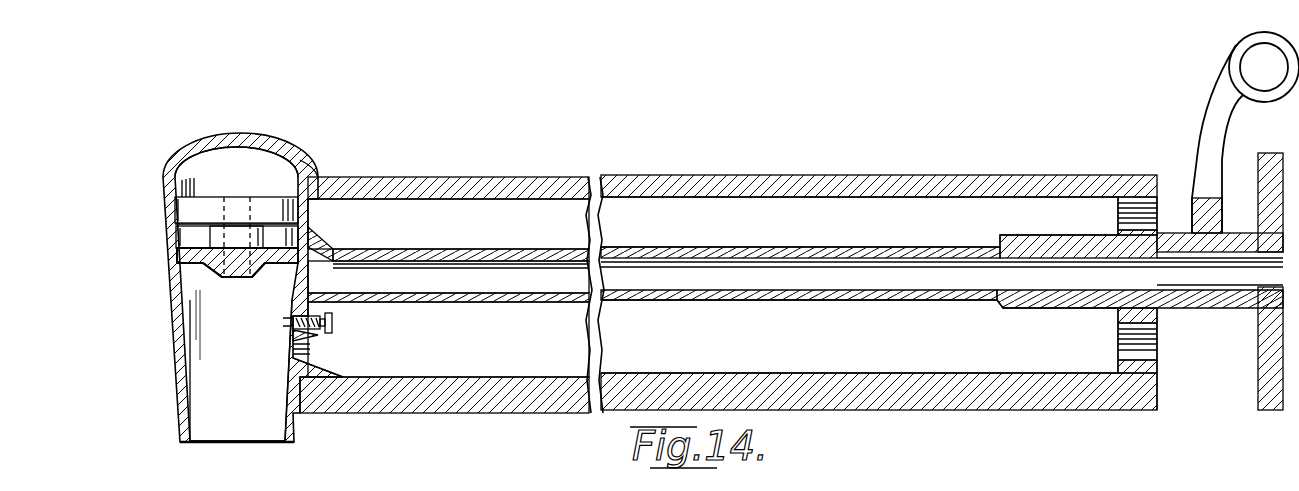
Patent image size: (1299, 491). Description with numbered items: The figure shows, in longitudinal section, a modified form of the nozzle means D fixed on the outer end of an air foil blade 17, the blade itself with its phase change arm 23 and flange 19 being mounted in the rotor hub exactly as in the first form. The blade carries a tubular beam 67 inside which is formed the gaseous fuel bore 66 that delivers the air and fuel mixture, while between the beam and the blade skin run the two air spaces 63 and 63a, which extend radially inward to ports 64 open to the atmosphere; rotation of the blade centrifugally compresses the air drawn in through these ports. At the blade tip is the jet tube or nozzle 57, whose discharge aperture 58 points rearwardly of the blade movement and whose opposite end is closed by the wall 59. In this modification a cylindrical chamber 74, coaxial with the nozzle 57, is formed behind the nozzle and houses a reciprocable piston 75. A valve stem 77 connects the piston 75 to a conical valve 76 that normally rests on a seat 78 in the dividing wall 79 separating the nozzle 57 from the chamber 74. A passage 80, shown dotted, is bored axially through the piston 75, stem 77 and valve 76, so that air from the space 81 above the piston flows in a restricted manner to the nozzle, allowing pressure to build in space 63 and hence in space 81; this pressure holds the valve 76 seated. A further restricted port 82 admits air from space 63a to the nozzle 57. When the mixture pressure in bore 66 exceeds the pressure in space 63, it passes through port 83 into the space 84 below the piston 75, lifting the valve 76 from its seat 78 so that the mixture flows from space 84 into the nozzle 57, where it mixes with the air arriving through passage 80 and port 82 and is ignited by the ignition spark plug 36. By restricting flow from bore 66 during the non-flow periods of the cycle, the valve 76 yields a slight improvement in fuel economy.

The cylindrical chamber 74 is at (176, 176).
The space above piston 81 is at (222, 175).
The wall 59 is at (232, 152).
The jet discharge means D is at (314, 170).
The piston 75 is at (185, 207).
The valve stem 77 is at (212, 235).
The dividing wall 79 is at (198, 258).
The passage 80 is at (238, 215).
The conical valve 76 is at (208, 272).
The seat 78 is at (253, 278).
The jet tube 57 is at (241, 365).
The discharge aperture 58 is at (262, 443).
The ignition spark plug 36 is at (336, 330).
The port 82 is at (332, 358).
The air foil blade 17 is at (405, 181).
The space 63 is at (830, 165).
The space below piston 84 is at (320, 234).
The gaseous fuel bore 66 is at (548, 283).
The port 83 is at (320, 263).
The tubular beam 67 is at (700, 300).
The space 63a is at (713, 338).
The ports 64 is at (1130, 220).
The flange 19 is at (1268, 392).
The phase change arm 23 is at (1197, 143).